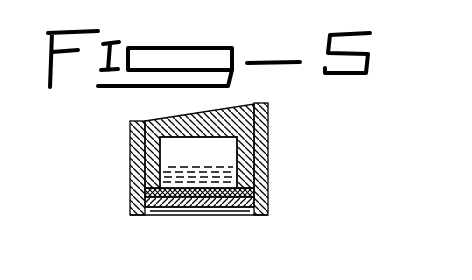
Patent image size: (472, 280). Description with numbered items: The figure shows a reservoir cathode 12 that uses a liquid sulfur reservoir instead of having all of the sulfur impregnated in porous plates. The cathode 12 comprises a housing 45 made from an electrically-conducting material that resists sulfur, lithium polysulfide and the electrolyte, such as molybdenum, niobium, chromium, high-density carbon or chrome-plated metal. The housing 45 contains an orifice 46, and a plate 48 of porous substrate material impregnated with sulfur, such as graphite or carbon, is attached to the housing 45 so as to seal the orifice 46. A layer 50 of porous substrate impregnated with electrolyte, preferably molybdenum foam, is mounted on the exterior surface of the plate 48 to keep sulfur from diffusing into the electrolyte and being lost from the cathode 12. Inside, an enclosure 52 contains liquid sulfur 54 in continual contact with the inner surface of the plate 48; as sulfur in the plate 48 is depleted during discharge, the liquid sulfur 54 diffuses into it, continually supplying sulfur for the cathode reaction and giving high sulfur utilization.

The cathode 12 is at (124, 138).
The housing 45 is at (256, 124).
The enclosure 52 is at (214, 152).
The liquid sulfur 54 is at (182, 172).
The plate 48 is at (252, 193).
The orifice 46 is at (162, 215).
The layer 50 is at (233, 215).